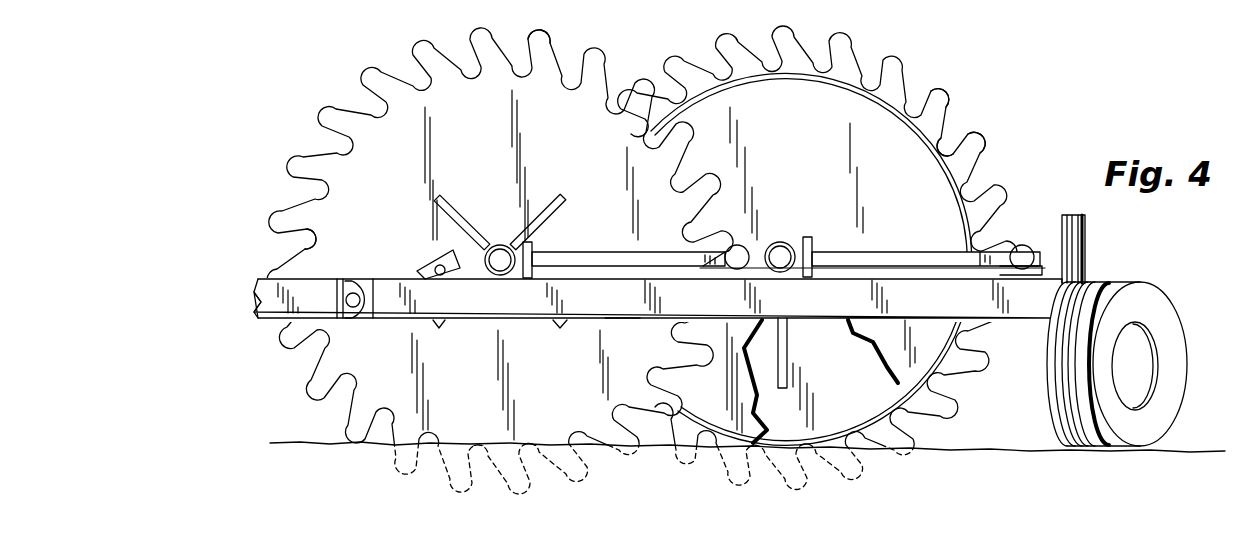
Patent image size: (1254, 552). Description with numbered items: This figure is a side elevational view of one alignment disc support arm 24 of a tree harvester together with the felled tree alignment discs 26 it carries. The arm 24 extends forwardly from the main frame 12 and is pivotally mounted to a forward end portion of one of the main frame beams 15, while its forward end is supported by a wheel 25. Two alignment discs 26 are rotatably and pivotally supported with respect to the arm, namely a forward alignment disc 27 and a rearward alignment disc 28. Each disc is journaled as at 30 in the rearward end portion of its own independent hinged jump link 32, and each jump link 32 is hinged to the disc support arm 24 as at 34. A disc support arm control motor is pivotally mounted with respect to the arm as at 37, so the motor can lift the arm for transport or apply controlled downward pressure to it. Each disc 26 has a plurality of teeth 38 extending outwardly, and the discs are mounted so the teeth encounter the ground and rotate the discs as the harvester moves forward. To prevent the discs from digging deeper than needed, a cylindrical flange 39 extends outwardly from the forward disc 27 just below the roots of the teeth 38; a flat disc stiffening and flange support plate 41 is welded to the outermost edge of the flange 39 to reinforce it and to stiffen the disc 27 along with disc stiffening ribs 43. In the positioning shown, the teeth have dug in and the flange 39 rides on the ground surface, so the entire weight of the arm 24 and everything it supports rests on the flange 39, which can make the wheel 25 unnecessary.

The main frame 12 is at (268, 298).
The main frame beam 15 is at (272, 310).
The alignment disc support arm 24 is at (618, 321).
The wheel 25 is at (1133, 295).
The felled tree alignment disc 26 is at (393, 134).
The forward alignment disc 27 is at (893, 83).
The rearward alignment disc 28 is at (337, 220).
The journal 30 is at (500, 246).
The hinged jump link 32 is at (600, 252).
The jump link hinge 34 is at (737, 246).
The motor mounting pivot 37 is at (420, 264).
The teeth 38 is at (548, 38).
The cylindrical flange 39 is at (923, 128).
The flat disc stiffening and flange support plate 41 is at (927, 180).
The disc stiffening rib 43 is at (440, 198).